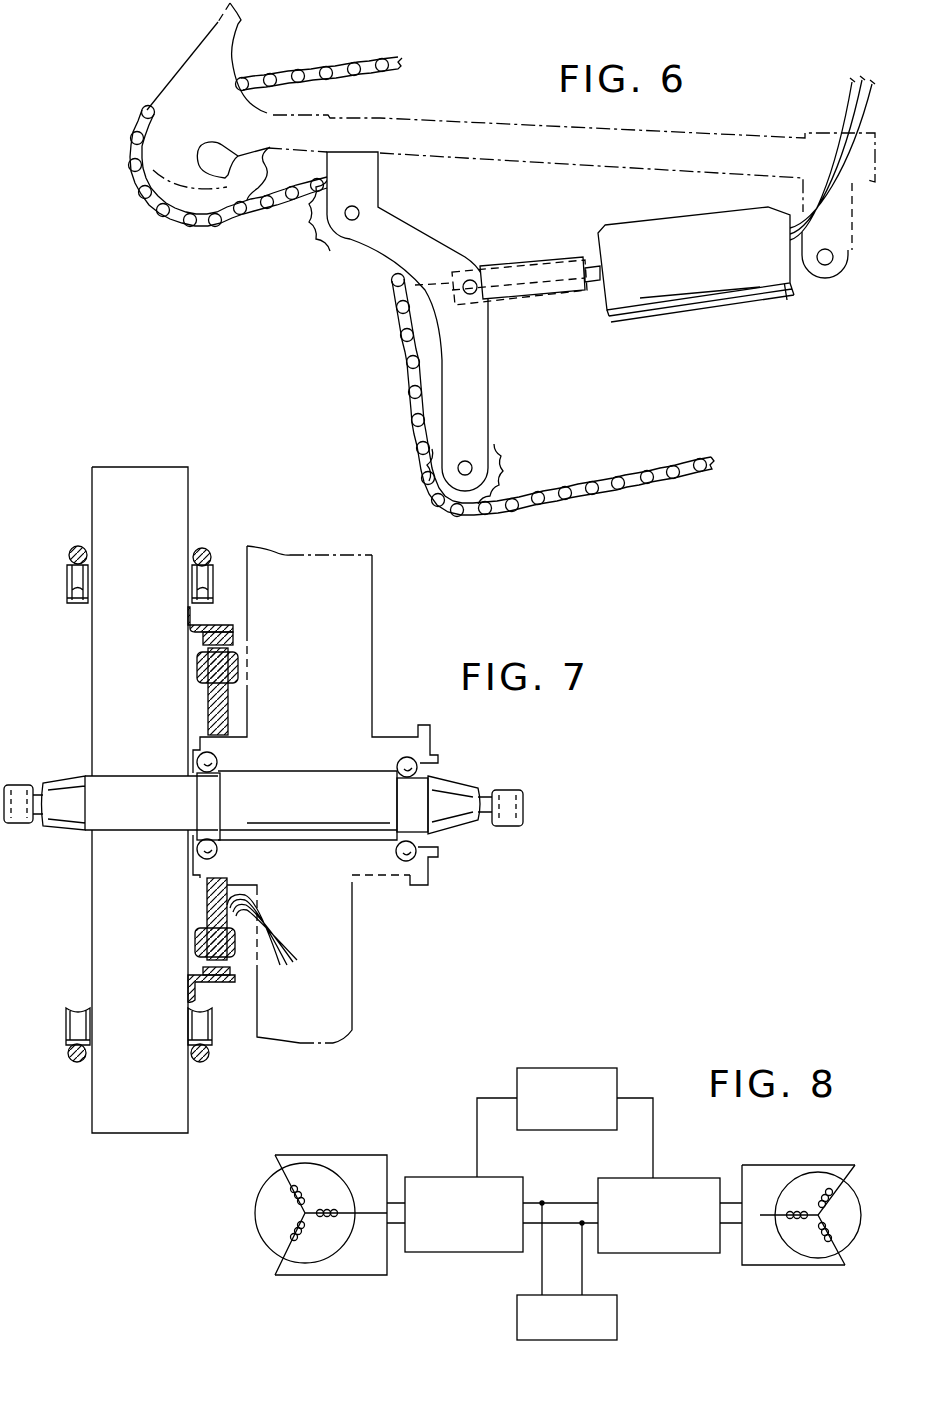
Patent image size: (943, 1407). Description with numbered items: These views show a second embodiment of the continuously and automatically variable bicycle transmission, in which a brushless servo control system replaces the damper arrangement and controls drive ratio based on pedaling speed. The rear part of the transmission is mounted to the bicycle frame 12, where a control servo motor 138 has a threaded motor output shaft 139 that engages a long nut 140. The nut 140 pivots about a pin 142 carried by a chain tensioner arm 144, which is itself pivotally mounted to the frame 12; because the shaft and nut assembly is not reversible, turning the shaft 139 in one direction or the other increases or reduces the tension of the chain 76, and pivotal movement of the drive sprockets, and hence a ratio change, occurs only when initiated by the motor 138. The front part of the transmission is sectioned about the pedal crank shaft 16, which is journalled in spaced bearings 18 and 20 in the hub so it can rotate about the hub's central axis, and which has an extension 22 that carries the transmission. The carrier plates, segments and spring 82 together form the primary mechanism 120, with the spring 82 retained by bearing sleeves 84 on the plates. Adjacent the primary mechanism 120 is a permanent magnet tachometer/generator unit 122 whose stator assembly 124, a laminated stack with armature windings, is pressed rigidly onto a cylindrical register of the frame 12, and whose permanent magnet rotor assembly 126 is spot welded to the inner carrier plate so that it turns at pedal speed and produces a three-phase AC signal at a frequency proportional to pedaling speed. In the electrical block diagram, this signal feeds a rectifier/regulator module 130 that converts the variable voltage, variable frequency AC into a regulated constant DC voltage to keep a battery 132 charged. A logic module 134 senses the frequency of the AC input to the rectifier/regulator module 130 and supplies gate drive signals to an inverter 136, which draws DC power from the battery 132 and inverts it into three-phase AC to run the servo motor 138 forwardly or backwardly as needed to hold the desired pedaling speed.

In FIG. 6, the frame 12 is at (406, 125).
In FIG. 7, the frame 12 is at (352, 949).
In FIG. 7, the pedal crank shaft 16 is at (310, 820).
In FIG. 7, the bearing 18 is at (220, 758).
In FIG. 7, the bearing 20 is at (404, 762).
In FIG. 7, the extension of shaft 22 is at (100, 826).
In FIG. 6, the chain 76 is at (327, 68).
In FIG. 7, the spring 82 is at (79, 546).
In FIG. 7, the bearing sleeve 84 is at (66, 578).
In FIG. 7, the primary mechanism 120 is at (92, 760).
In FIG. 7, the tachometer/generator unit 122 is at (229, 697).
In FIG. 8, the tachometer/generator unit 122 is at (756, 1266).
In FIG. 7, the stator assembly 124 is at (228, 713).
In FIG. 7, the rotor assembly 126 is at (233, 630).
In FIG. 8, the rectifier/regulator module 130 is at (677, 1254).
In FIG. 8, the battery 132 is at (618, 1320).
In FIG. 8, the logic module 134 is at (578, 1066).
In FIG. 8, the inverter 136 is at (450, 1253).
In FIG. 6, the servo motor 138 is at (707, 298).
In FIG. 8, the servo motor 138 is at (305, 1275).
In FIG. 6, the motor output shaft 139 is at (592, 266).
In FIG. 6, the long nut 140 is at (531, 266).
In FIG. 6, the pin 142 is at (472, 278).
In FIG. 6, the chain tensioner arm 144 is at (467, 413).